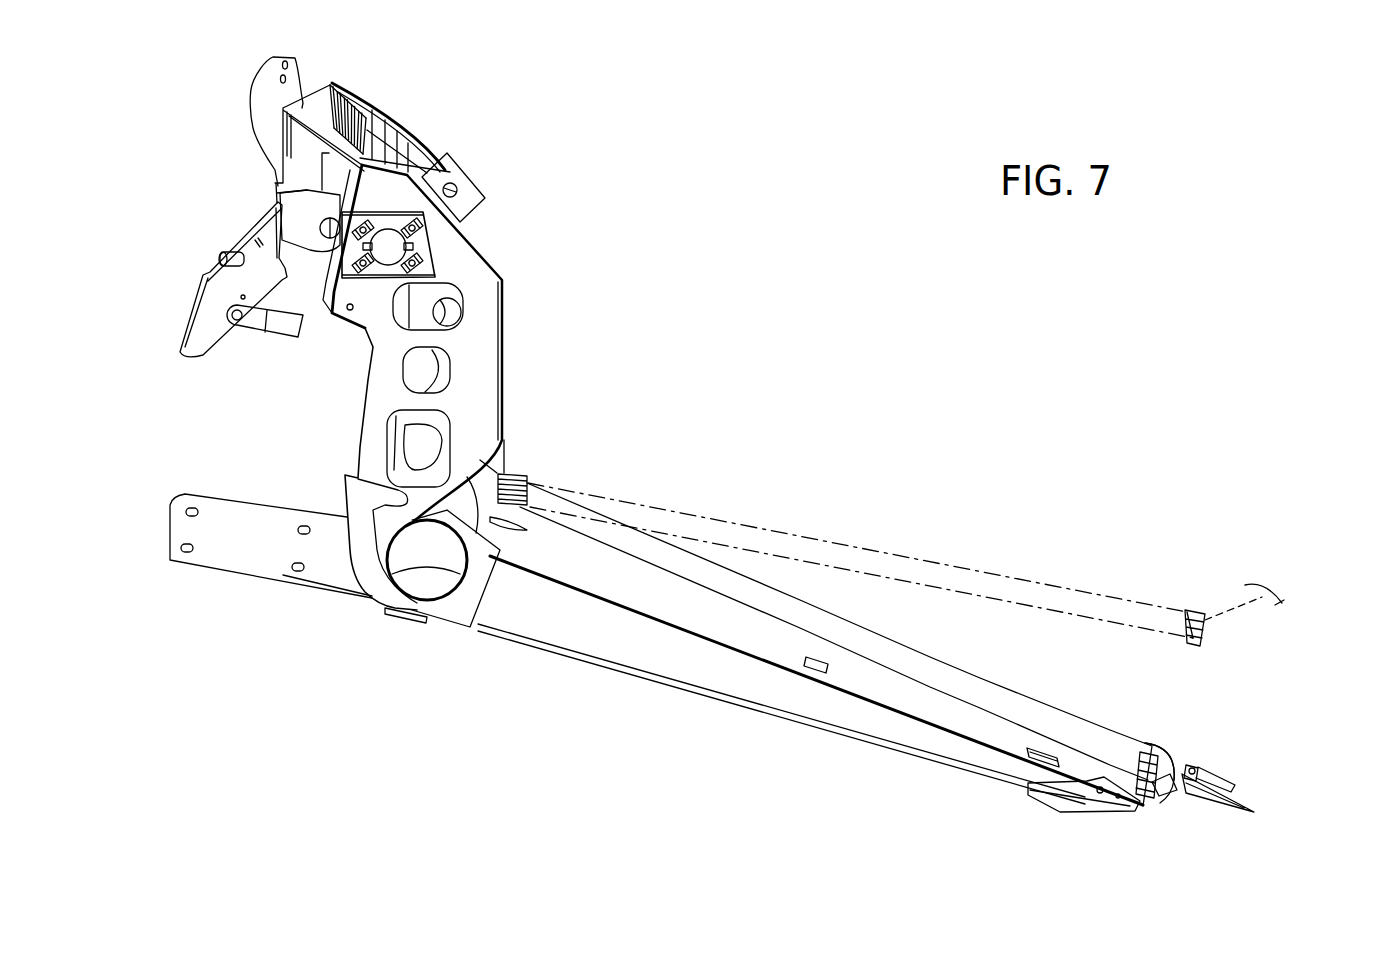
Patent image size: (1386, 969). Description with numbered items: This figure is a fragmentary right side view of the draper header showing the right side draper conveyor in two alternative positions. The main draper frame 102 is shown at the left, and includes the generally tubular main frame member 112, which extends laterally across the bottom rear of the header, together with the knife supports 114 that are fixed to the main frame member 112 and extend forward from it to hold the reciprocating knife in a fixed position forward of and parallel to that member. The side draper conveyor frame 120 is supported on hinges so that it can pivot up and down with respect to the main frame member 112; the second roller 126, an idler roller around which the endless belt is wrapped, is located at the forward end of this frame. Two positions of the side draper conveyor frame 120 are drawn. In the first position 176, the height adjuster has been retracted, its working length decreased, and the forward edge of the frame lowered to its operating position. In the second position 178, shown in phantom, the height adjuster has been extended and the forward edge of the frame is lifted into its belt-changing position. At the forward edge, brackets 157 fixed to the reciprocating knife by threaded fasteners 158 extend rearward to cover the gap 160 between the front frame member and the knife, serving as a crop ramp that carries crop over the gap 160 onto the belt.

The main draper frame 102 is at (330, 434).
The main frame member 112 is at (443, 603).
The knife supports 114 is at (590, 660).
The side draper conveyor frame 120 is at (765, 470).
The second roller 126 is at (890, 565).
The brackets 157 is at (1259, 582).
The threaded fasteners 158 is at (1173, 773).
The gap 160 is at (1165, 786).
The position 176 is at (1022, 674).
The position 178 is at (1038, 559).